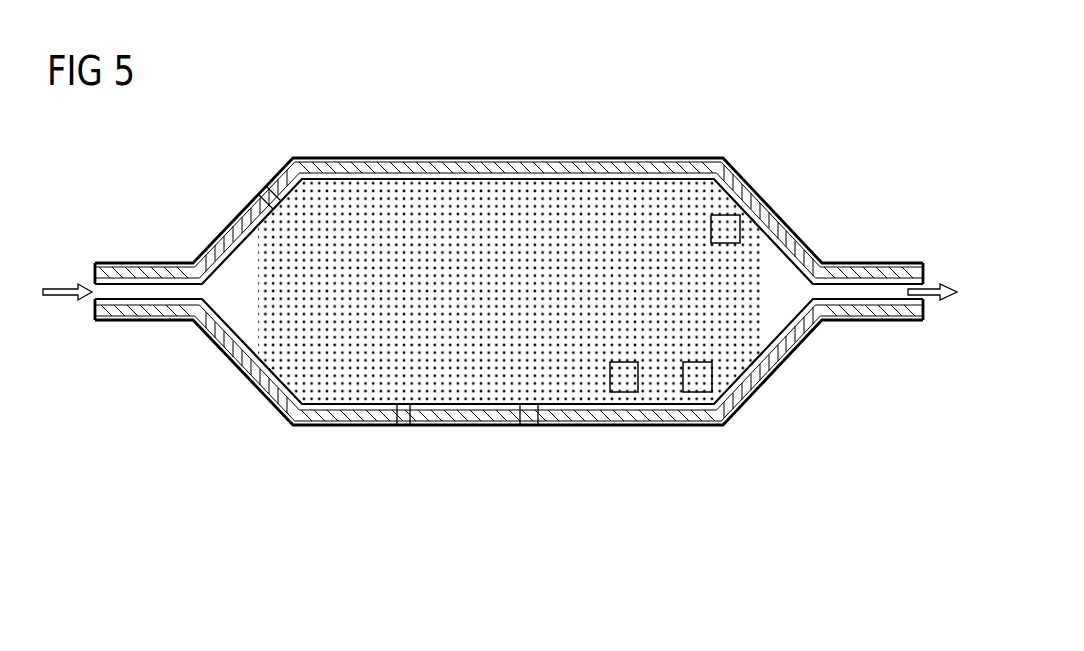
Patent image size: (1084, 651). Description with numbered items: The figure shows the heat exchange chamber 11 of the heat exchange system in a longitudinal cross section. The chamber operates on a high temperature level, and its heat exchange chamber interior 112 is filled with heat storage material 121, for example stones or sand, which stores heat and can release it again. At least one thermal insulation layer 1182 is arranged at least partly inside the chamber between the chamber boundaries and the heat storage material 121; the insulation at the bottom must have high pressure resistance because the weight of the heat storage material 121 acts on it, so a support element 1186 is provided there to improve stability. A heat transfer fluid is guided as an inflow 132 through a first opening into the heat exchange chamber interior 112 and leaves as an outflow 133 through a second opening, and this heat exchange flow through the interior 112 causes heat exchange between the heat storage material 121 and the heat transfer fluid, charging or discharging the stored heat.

The heat exchange chamber 11 is at (769, 133).
The heat exchange chamber interior 112 is at (773, 324).
The thermal insulation layer 1182 is at (270, 195).
The support element 1186 is at (532, 437).
The heat storage material 121 is at (728, 223).
The inflow 132 is at (60, 283).
The outflow 133 is at (938, 282).